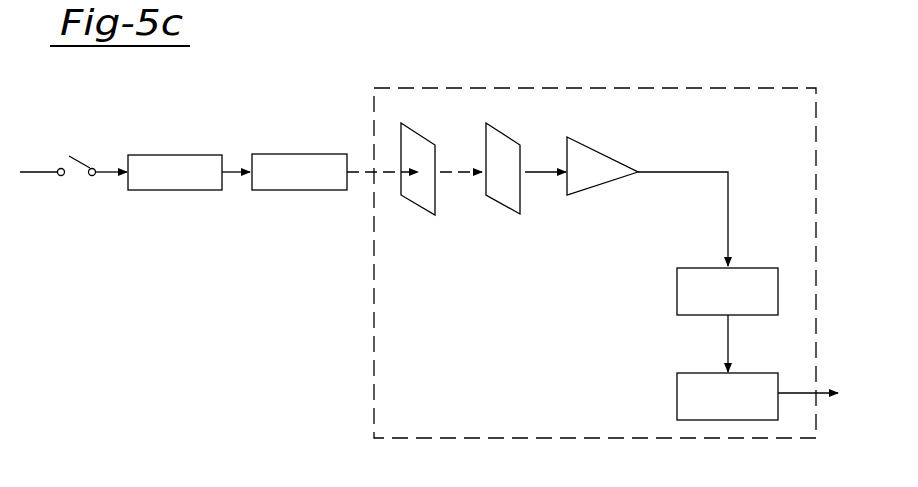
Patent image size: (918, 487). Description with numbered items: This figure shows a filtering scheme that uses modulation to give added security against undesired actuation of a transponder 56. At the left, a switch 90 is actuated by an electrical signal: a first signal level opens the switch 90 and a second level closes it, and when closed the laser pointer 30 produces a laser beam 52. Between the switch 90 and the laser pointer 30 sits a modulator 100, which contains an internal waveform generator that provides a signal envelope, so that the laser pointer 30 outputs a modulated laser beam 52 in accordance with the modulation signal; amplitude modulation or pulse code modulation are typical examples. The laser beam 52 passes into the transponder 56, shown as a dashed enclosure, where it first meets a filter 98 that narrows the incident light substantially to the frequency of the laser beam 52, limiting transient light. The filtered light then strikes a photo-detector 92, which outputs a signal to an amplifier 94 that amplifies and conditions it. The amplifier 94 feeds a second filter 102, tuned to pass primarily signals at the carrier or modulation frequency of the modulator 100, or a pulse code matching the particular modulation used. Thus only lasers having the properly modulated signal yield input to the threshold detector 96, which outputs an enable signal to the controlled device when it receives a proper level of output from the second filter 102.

The switch 90 is at (69, 157).
The modulator 100 is at (173, 190).
The laser pointer 30 is at (297, 154).
The laser beam 52 is at (355, 170).
The transponder 56 is at (560, 88).
The filter 98 is at (426, 140).
The photo-detector 92 is at (509, 143).
The amplifier 94 is at (605, 156).
The second filter 102 is at (700, 273).
The threshold detector 96 is at (680, 398).